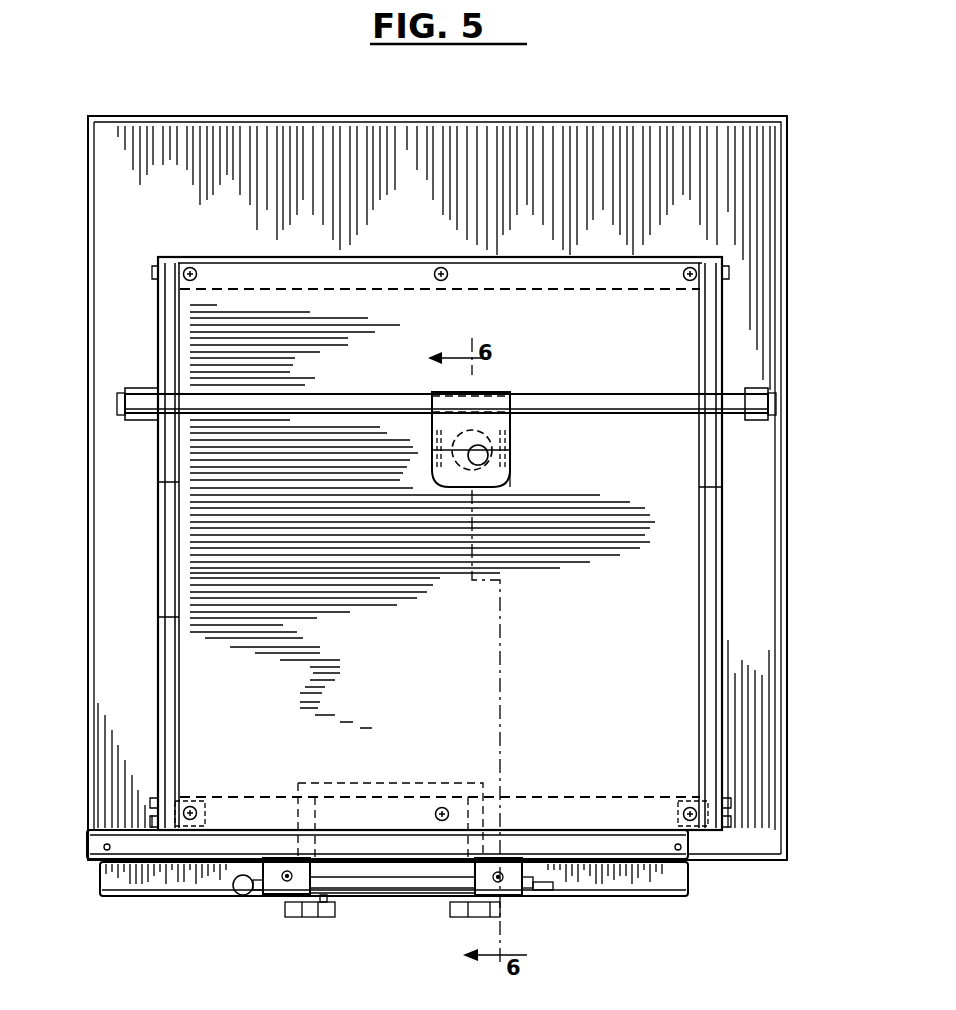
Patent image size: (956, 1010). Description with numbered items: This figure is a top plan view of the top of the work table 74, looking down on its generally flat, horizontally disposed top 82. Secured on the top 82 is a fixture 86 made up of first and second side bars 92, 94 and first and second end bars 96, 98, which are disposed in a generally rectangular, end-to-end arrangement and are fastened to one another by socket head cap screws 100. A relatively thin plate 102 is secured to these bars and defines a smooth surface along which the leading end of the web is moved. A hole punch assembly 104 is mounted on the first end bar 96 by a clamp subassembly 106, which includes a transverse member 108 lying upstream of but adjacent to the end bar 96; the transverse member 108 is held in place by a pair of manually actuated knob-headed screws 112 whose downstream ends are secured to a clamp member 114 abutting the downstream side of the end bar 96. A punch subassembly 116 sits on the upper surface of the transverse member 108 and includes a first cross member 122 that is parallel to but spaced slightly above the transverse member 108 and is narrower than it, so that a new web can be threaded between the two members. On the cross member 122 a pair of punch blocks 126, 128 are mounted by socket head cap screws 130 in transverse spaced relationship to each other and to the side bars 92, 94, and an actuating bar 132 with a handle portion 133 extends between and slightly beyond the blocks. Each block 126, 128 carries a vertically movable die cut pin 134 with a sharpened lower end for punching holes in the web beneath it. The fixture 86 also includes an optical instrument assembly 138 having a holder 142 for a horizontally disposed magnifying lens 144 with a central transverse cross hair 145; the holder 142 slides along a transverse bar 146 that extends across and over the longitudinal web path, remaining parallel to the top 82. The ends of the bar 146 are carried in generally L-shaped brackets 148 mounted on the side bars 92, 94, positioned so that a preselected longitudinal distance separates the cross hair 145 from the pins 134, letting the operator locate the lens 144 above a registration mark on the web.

The table 74 is at (574, 118).
The top 82 is at (645, 176).
The fixture 86 is at (437, 526).
The first side bar 92 is at (722, 620).
The second side bar 94 is at (157, 622).
The first end bar 96 is at (237, 810).
The second end bar 98 is at (372, 282).
The socket head cap screws 100 is at (152, 272).
The thin plate 102 is at (462, 640).
The hole punch assembly 104 is at (284, 932).
The clamp subassembly 106 is at (530, 910).
The transverse member 108 is at (662, 896).
The knob-headed screws 112 is at (340, 905).
The clamp member 114 is at (415, 782).
The punch subassembly 116 is at (262, 921).
The first cross member 122 is at (660, 849).
The punch block 126 is at (496, 876).
The punch block 128 is at (268, 858).
The socket head cap screws 130 is at (268, 899).
The actuating bar 132 is at (420, 892).
The handle portion 133 is at (232, 884).
The die cut pin 134 is at (290, 876).
The optical instrument assembly 138 is at (516, 493).
The holder 142 is at (490, 402).
The magnifying lens 144 is at (482, 448).
The cross hair 145 is at (498, 467).
The transverse bar 146 is at (343, 400).
The L-shaped brackets 148 is at (120, 405).